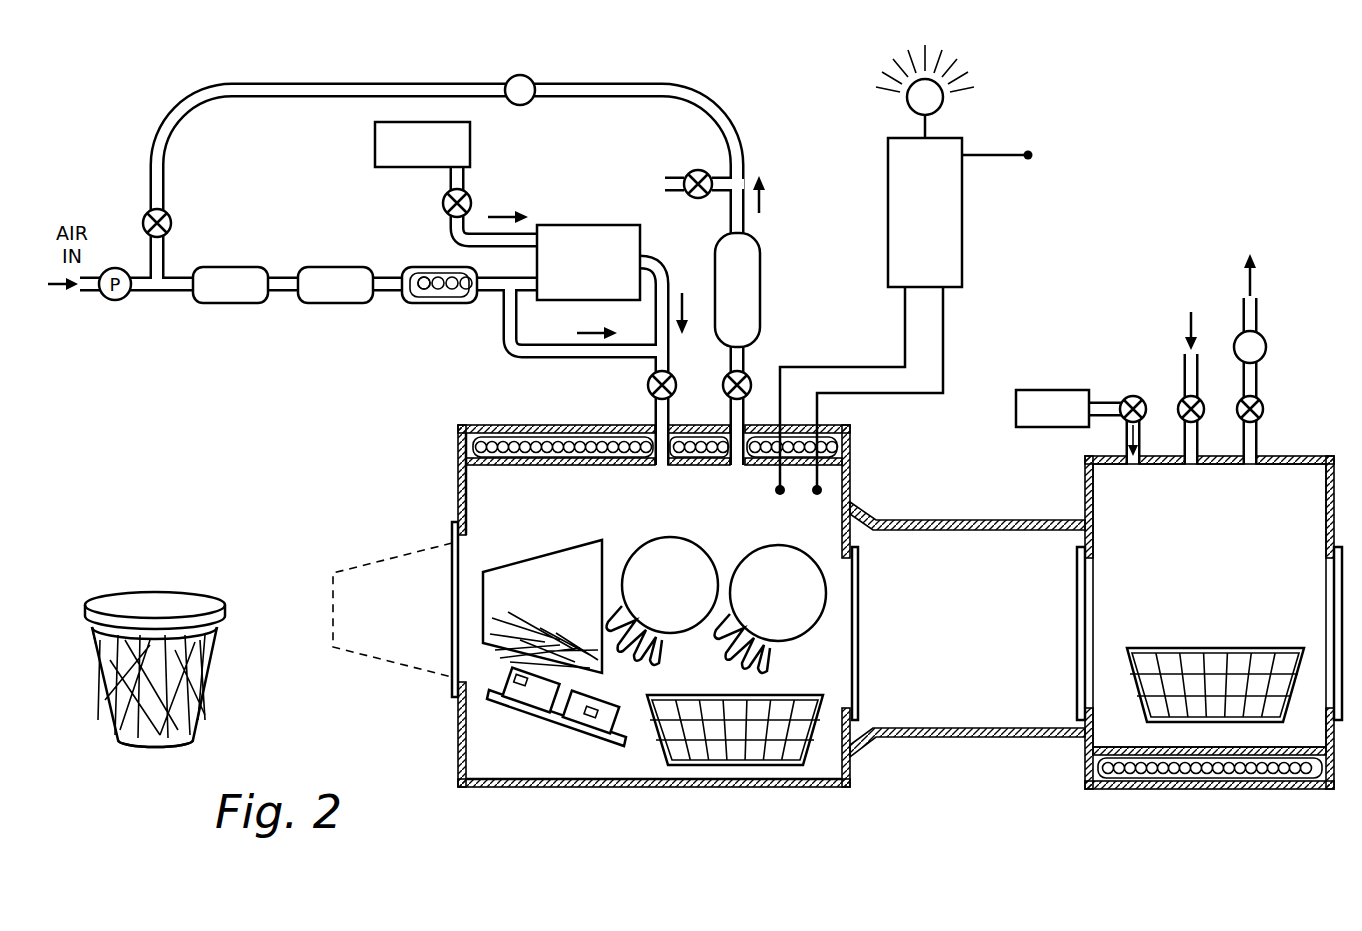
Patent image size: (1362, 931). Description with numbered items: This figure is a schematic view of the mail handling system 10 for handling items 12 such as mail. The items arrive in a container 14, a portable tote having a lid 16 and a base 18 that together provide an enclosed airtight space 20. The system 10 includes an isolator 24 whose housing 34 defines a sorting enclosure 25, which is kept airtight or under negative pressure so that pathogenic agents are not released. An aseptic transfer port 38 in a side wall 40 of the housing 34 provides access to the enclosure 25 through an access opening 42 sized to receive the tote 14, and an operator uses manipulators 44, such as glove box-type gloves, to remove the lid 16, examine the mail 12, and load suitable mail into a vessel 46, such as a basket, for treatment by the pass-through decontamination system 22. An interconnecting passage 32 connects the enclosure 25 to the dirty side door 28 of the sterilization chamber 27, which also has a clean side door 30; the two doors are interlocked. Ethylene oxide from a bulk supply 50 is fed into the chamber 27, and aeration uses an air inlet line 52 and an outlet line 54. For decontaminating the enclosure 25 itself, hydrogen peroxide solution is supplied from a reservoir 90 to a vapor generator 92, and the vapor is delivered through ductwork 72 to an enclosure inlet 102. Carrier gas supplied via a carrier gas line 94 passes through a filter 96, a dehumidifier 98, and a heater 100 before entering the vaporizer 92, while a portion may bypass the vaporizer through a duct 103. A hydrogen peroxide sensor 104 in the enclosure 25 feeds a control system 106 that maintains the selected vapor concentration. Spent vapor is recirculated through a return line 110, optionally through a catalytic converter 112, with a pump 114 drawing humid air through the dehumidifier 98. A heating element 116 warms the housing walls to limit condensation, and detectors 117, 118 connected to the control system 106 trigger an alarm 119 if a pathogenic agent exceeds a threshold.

The mail handling system 10 is at (196, 421).
The items 12 is at (573, 617).
The container 14 is at (101, 584).
The lid 16 is at (565, 726).
The base 18 is at (557, 550).
The enclosed airtight space 20 is at (200, 704).
The pass-through decontamination system 22 is at (1083, 495).
The isolator 24 is at (440, 434).
The sorting enclosure 25 is at (522, 495).
The sterilization chamber 27 is at (1199, 553).
The dirty side door 28 is at (1093, 620).
The clean side door 30 is at (1326, 620).
The interconnecting passage 32 is at (965, 520).
The housing 34 is at (790, 788).
The aseptic transfer port 38 is at (452, 612).
The side wall 40 is at (458, 763).
The access opening 42 is at (498, 540).
The manipulators 44 is at (780, 596).
The vessel 46 is at (775, 695).
The bulk supply 50 is at (1036, 390).
The air inlet line 52 is at (1185, 372).
The outlet line 54 is at (1262, 382).
The ductwork 72 is at (672, 282).
The reservoir 90 is at (375, 150).
The vapor generator 92 is at (596, 225).
The carrier gas line 94 is at (490, 292).
The filter 96 is at (250, 305).
The dehumidifier 98 is at (348, 305).
The heater 100 is at (425, 267).
The enclosure inlet 102 is at (641, 420).
The bypass duct 103 is at (505, 345).
The hydrogen peroxide sensor 104 is at (820, 496).
The control system 106 is at (962, 220).
The return line 110 is at (598, 82).
The catalytic converter 112 is at (770, 290).
The pump 114 is at (510, 76).
The heating element 116 is at (556, 425).
The detector 117 is at (775, 490).
The detector 118 is at (1030, 160).
The alarm 119 is at (940, 105).